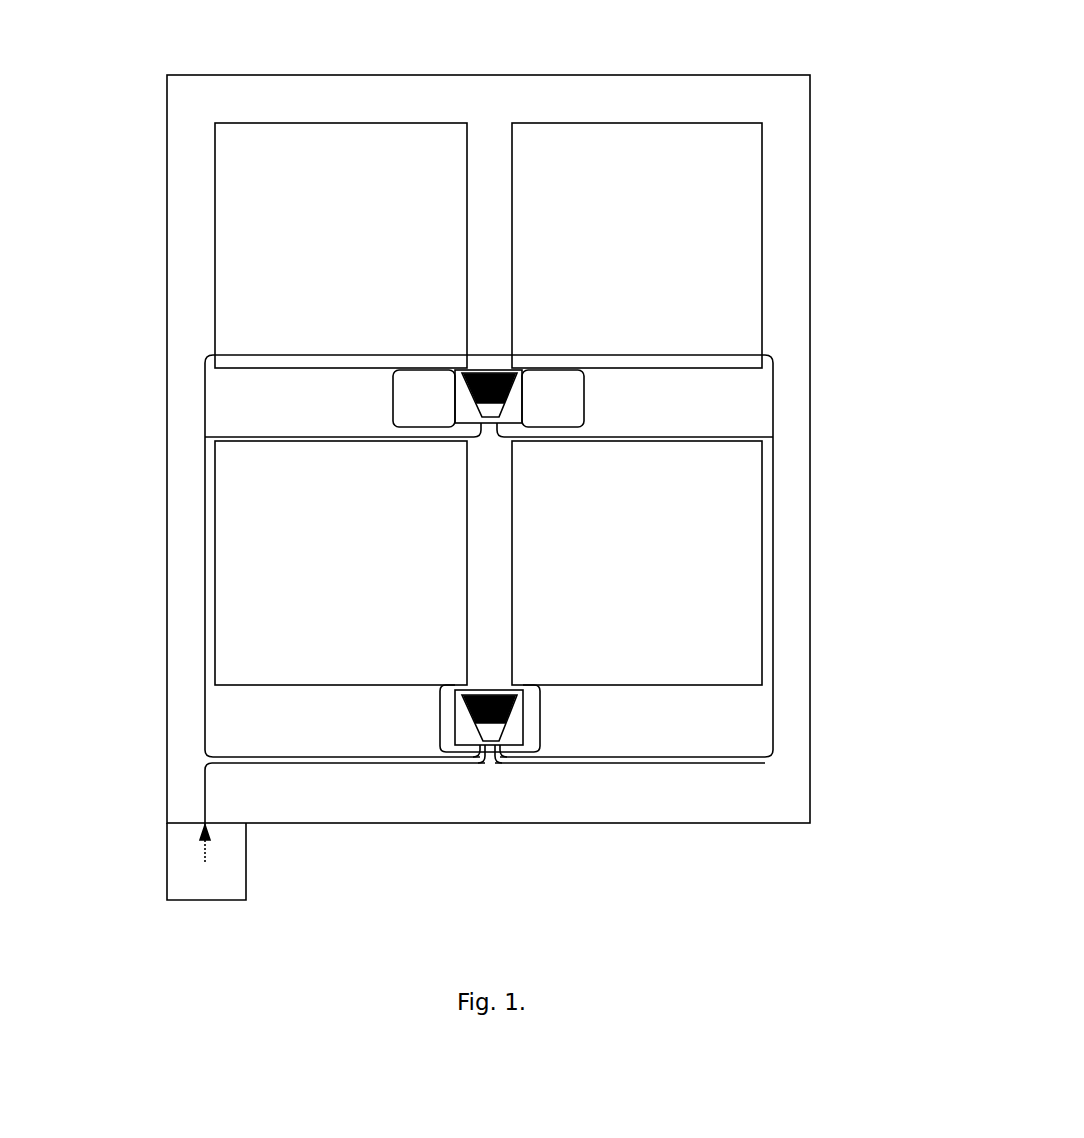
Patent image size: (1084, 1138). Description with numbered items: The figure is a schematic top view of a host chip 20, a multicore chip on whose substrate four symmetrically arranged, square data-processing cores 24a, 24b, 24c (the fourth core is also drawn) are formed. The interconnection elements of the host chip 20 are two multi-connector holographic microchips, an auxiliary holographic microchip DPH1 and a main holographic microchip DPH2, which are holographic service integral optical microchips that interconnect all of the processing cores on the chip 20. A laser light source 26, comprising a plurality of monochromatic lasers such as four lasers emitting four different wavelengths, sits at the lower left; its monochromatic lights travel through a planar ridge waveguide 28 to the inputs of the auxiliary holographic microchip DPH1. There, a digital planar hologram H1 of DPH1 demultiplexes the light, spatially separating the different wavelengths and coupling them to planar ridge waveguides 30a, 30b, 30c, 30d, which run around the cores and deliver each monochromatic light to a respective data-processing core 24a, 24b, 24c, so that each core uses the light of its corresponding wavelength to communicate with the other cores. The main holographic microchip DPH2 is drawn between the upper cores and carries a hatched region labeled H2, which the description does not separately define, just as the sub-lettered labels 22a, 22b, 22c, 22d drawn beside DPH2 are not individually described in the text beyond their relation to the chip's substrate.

The host chip 20 is at (187, 325).
The pressure chamber 22a is at (393, 393).
The pressure chamber 22b is at (585, 388).
The fluid channel 22c is at (393, 437).
The fluid channel 22d is at (583, 437).
The data-processing core 24a is at (228, 195).
The data-processing core 24b is at (740, 201).
The data-processing core 24c is at (233, 627).
The laser light source 26 is at (187, 868).
The planar ridge waveguide 28 is at (205, 790).
The planar ridge waveguide 30a is at (203, 475).
The planar ridge waveguide 30b is at (773, 465).
The planar ridge waveguide 30c is at (440, 747).
The planar ridge waveguide 30d is at (540, 740).
The auxiliary holographic microchip DPH1 is at (516, 748).
The main holographic microchip DPH2 is at (480, 368).
The digital planar hologram H1 is at (471, 718).
The nozzle hole 2 H2 is at (522, 370).